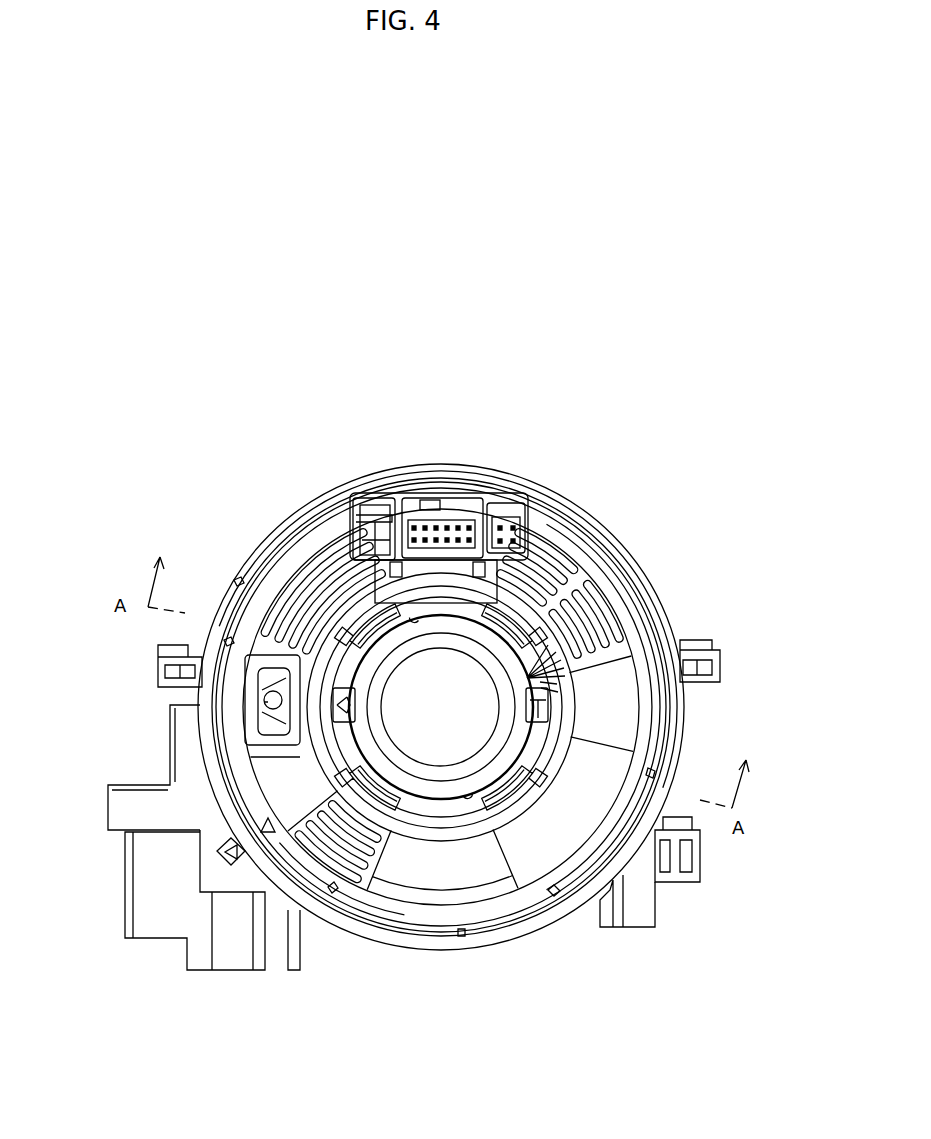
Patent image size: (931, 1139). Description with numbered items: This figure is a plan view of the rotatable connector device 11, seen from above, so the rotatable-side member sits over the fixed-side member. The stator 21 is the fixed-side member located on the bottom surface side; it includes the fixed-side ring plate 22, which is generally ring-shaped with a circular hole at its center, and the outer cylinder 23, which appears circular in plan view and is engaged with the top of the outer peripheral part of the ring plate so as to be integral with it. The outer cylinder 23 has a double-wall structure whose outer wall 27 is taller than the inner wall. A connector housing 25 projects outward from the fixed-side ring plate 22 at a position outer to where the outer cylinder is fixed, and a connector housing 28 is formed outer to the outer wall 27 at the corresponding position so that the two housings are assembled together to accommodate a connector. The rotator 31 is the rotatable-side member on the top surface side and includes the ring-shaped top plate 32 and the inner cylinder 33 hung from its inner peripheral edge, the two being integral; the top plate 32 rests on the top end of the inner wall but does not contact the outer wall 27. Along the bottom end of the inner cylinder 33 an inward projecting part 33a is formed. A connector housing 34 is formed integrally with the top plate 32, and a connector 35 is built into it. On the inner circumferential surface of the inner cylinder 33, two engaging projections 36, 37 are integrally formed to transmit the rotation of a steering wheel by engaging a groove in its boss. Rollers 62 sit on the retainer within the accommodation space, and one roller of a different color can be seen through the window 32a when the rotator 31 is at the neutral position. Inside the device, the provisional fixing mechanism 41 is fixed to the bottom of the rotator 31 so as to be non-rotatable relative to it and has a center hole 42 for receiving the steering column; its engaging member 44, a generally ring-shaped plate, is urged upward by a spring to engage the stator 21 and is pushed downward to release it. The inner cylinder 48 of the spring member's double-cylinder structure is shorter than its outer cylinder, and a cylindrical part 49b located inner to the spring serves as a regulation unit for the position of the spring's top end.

The rotatable connector device 11 is at (636, 396).
The stator 21 is at (432, 1085).
The fixed-side ring plate 22 is at (452, 958).
The outer cylinder 23 is at (389, 955).
The connector housing 25 is at (107, 793).
The outer wall 27 is at (480, 942).
The connector housing 28 is at (152, 805).
The rotator 31 is at (243, 552).
The top plate 32 is at (287, 556).
The window 32a is at (268, 670).
The inner cylinder 33 is at (347, 627).
The projecting part 33a is at (436, 812).
The connector housing 34 is at (475, 518).
The connector 35 is at (425, 522).
The engaging projection 36 is at (340, 718).
The engaging projection 37 is at (553, 693).
The provisional fixing mechanism 41 is at (528, 653).
The center hole 42 is at (445, 712).
The engaging member 44 is at (545, 686).
The inner cylinder 48 is at (482, 670).
The cylindrical part 49b is at (457, 665).
The rollers 62 is at (262, 698).